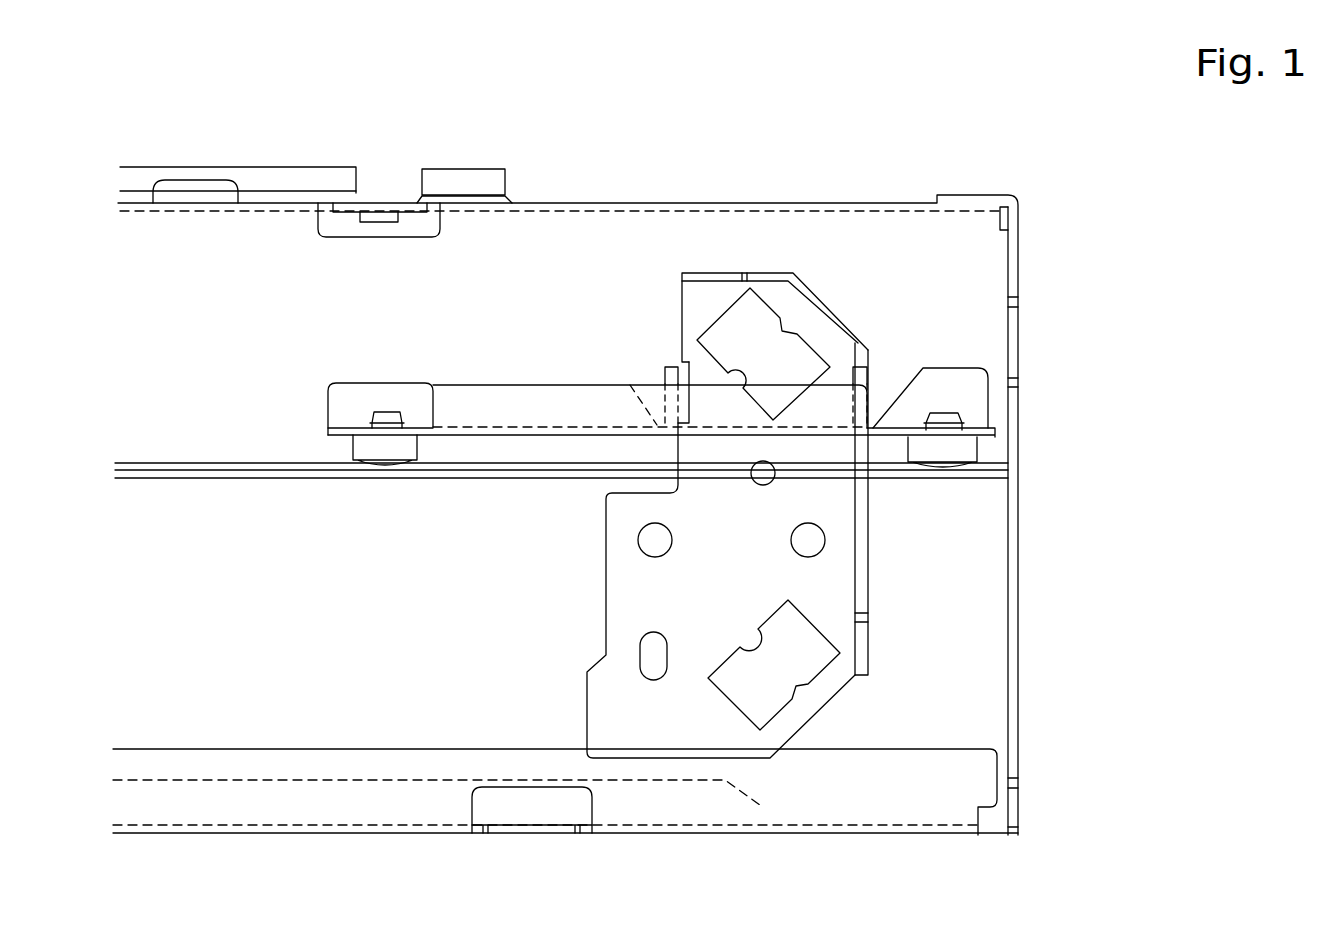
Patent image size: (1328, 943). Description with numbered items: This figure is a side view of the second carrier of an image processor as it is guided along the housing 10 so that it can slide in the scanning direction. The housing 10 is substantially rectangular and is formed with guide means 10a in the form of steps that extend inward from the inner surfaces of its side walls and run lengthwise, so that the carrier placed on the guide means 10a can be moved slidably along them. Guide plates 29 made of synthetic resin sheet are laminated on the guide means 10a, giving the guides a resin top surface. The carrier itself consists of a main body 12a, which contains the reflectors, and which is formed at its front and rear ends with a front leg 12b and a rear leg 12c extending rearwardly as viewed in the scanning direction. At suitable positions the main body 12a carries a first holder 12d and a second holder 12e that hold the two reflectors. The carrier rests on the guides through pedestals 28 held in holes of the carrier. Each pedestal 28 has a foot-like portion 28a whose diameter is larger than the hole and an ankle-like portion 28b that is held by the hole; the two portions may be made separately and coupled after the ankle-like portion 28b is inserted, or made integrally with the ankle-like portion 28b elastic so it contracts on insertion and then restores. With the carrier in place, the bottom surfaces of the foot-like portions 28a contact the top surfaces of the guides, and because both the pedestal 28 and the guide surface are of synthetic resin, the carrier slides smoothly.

The housing 10 is at (628, 230).
The guide means 10a is at (185, 475).
The guide plates 29 is at (255, 467).
The pedestal 28 is at (709, 463).
The foot-like portion 28a is at (398, 448).
The ankle-like portion 28b is at (385, 417).
The main body 12a is at (860, 580).
The front leg 12b is at (418, 398).
The rear leg 12c is at (975, 392).
The first holder 12d is at (708, 328).
The second holder 12e is at (810, 660).